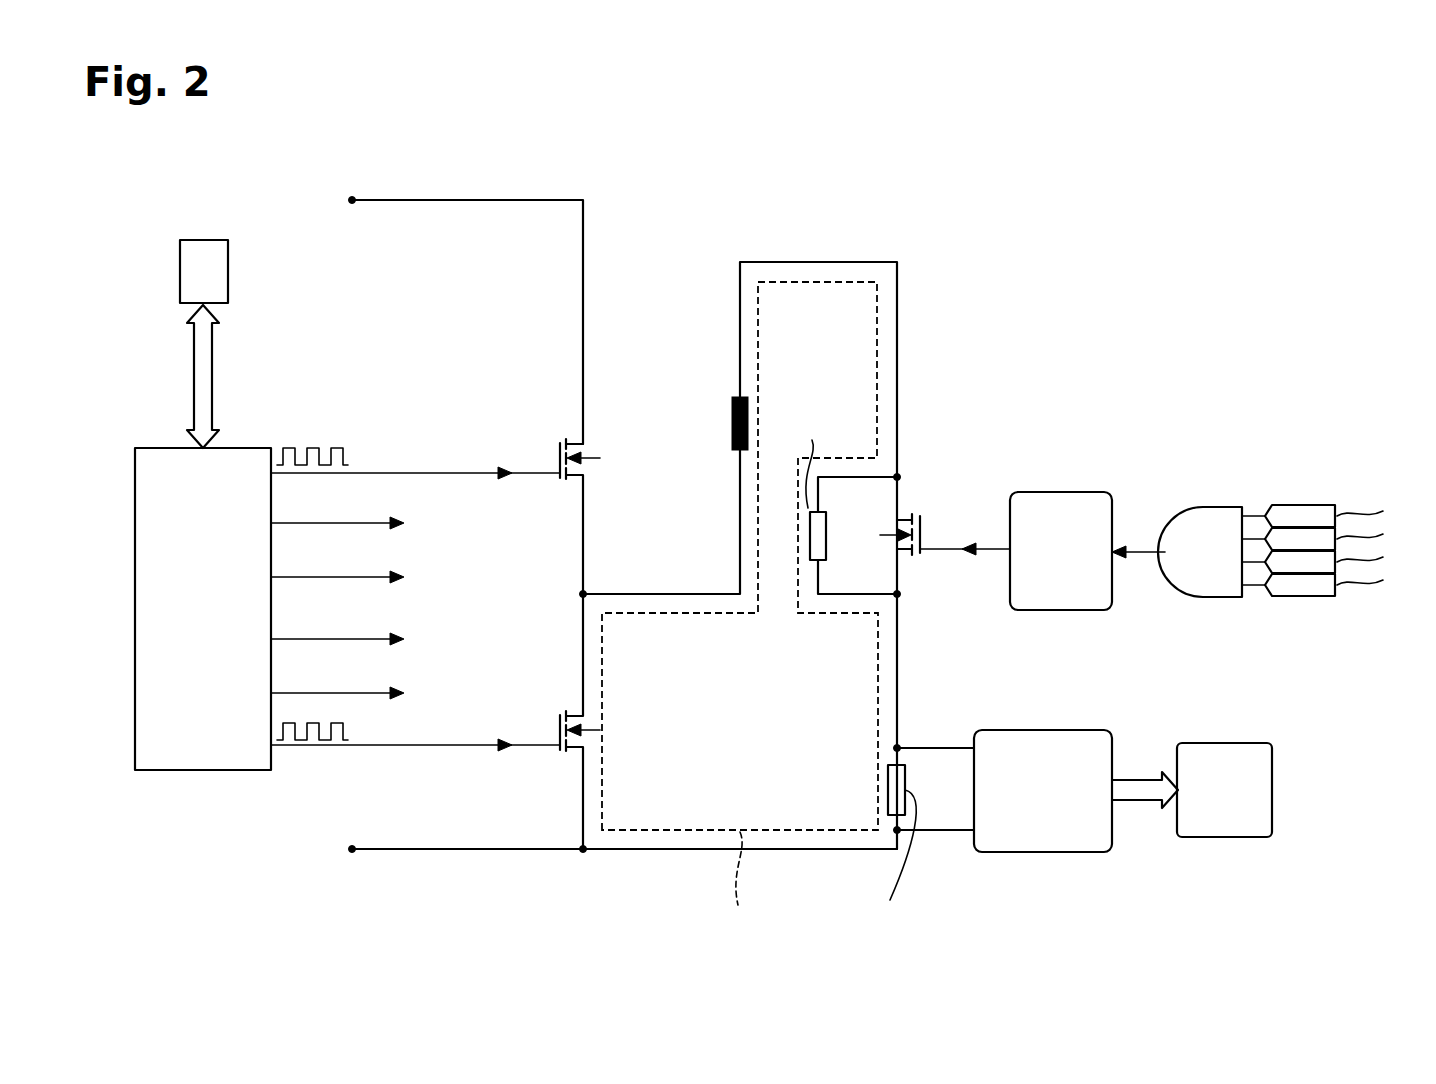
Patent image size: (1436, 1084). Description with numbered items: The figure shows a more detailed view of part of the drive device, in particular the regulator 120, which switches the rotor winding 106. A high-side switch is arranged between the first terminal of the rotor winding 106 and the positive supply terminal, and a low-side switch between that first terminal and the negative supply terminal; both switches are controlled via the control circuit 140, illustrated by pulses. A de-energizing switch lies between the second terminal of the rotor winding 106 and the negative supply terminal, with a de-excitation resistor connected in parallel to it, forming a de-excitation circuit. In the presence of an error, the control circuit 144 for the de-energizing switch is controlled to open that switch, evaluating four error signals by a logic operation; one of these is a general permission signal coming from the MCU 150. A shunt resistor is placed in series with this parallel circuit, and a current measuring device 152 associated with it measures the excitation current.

The rotor winding 106 is at (752, 405).
The regulator 120 is at (282, 882).
The control circuit 140 is at (203, 771).
The control circuit for the de-energizing switch 144 is at (1042, 492).
The MCU 150 is at (203, 240).
The current measuring device 152 is at (1042, 853).